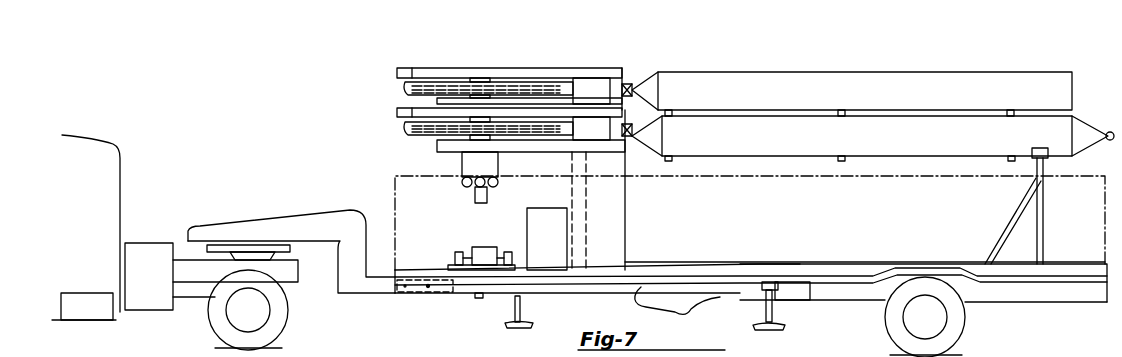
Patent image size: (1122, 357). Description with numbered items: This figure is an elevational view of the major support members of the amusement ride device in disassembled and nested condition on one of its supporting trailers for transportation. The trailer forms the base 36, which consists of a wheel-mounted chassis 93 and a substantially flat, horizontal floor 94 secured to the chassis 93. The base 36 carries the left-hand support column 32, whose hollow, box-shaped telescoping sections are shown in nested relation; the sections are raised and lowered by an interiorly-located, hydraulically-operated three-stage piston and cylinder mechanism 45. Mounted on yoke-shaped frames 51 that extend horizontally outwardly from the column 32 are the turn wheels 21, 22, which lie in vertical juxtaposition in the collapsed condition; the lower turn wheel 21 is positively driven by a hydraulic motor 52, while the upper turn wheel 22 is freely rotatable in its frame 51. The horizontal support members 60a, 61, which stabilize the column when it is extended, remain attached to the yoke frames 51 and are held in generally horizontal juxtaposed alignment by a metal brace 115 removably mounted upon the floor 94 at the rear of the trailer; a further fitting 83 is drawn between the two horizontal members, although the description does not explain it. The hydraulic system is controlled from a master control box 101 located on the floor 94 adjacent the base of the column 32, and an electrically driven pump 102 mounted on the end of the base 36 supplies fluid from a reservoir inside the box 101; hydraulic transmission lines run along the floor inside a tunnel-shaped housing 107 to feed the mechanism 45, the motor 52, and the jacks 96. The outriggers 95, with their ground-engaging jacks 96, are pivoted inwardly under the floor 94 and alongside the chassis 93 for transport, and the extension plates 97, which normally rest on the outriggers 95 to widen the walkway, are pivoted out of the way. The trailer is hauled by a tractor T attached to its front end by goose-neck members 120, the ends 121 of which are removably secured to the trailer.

The tractor T is at (121, 165).
The goose-neck member 120 is at (312, 214).
The base 36 is at (388, 196).
The yoke-shaped frame 51 is at (397, 73).
The turn wheel 22 is at (402, 89).
The turn wheel 21 is at (402, 130).
The hydraulic motor 52 is at (469, 190).
The three-stage piston and cylinder mechanism 45 is at (582, 237).
The master control box 101 is at (561, 243).
The electrically driven pump 102 is at (492, 230).
The support column 32 is at (628, 204).
The floor 94 is at (840, 276).
The end 121 is at (438, 297).
The jack 96 is at (521, 304).
The wheel-mounted chassis 93 is at (835, 296).
The outrigger 95 is at (677, 305).
The tunnel-shaped housing 107 is at (805, 262).
The upper horizontal member section 60a is at (949, 77).
The lower horizontal member 61 is at (796, 157).
The missile lug 83 is at (846, 117).
The extension plate 97 is at (940, 160).
The metal brace 115 is at (1044, 219).